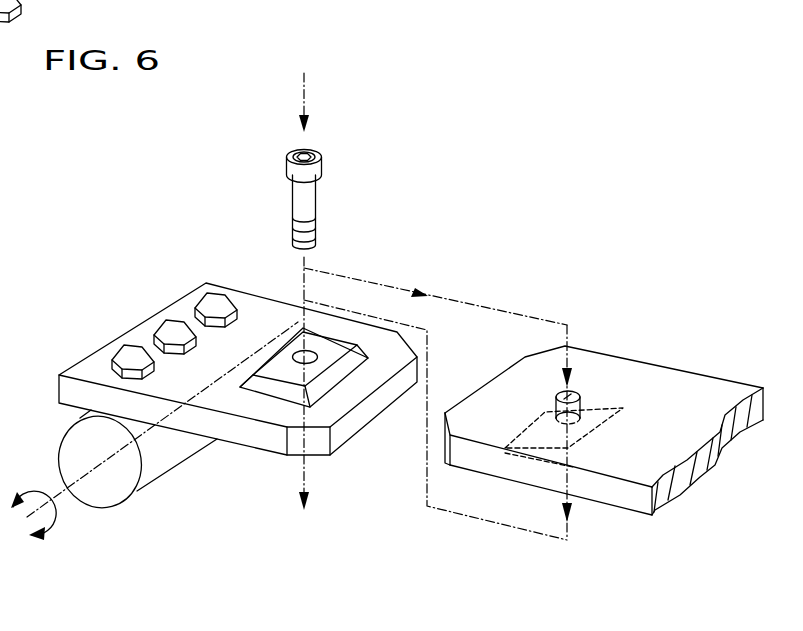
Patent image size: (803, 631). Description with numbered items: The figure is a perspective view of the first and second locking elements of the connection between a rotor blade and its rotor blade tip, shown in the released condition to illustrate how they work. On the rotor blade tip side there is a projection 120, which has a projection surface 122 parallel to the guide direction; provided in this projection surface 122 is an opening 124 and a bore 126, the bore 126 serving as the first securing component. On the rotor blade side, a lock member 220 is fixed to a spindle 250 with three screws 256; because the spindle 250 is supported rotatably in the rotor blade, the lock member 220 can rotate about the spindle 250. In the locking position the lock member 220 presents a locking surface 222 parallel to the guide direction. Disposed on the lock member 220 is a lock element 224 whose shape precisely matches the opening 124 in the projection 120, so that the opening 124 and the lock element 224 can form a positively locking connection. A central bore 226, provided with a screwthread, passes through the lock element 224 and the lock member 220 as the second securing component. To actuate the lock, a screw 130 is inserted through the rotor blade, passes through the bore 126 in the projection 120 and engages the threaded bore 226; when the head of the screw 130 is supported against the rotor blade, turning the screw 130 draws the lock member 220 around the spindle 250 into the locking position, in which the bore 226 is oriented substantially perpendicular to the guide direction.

The projection 120 is at (648, 390).
The projection surface 122 is at (640, 513).
The opening 124 is at (587, 443).
The bore 126 is at (553, 408).
The screw 130 is at (317, 205).
The lock member 220 is at (235, 438).
The locking surface 222 is at (245, 303).
The lock element 224 is at (293, 345).
The central bore 226 is at (318, 362).
The spindle 250 is at (147, 475).
The screws 256 is at (198, 305).